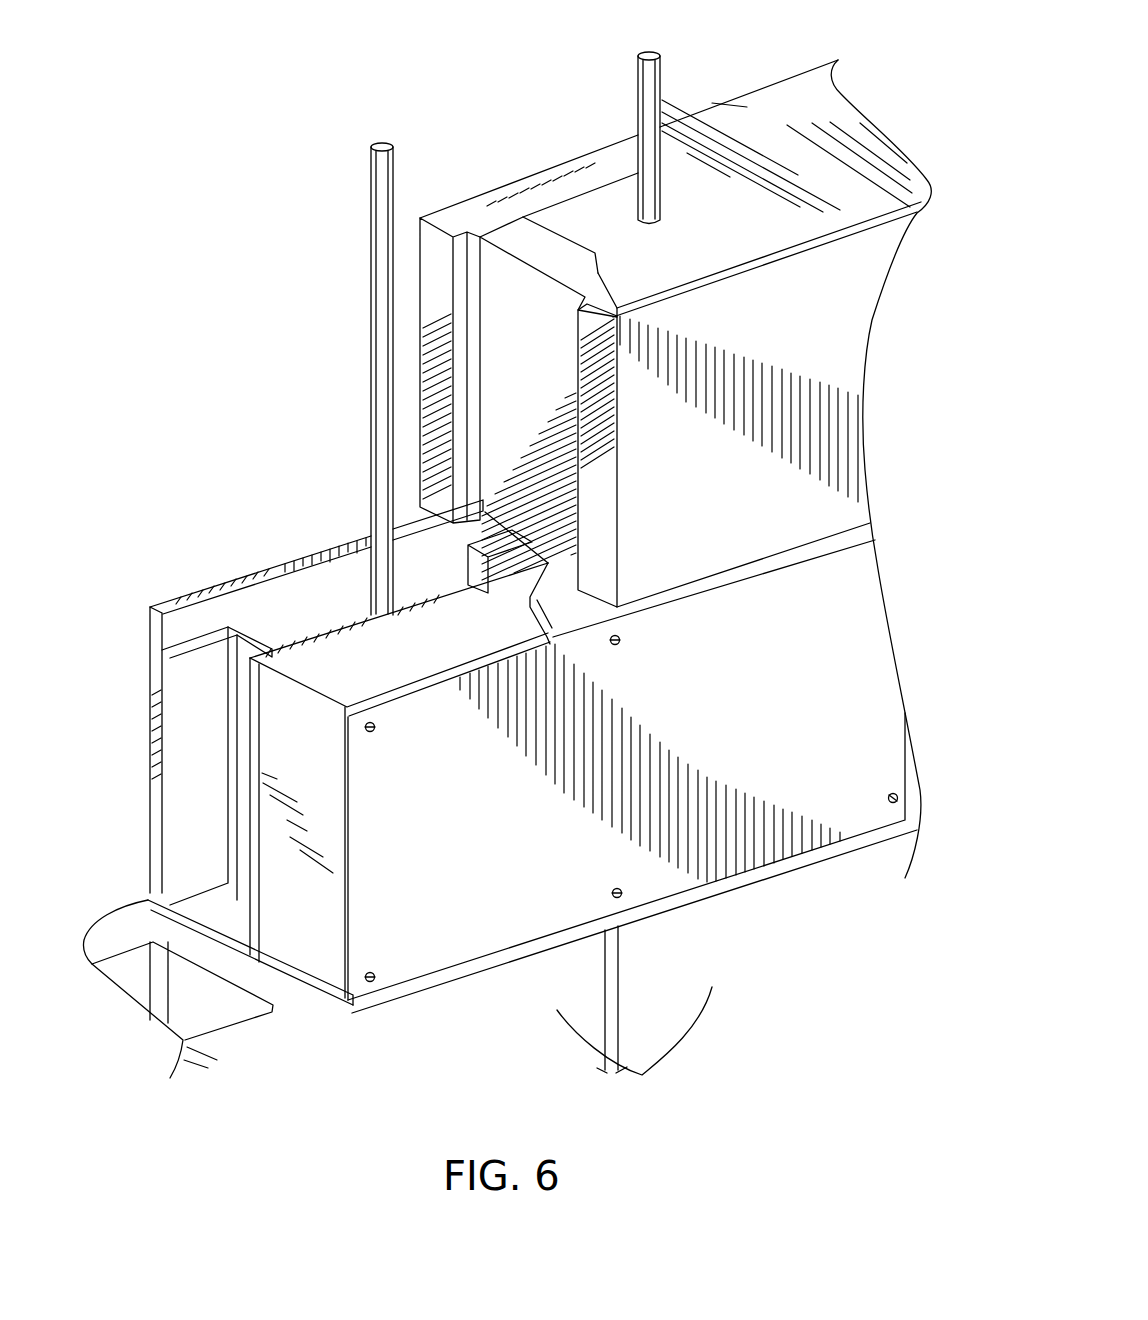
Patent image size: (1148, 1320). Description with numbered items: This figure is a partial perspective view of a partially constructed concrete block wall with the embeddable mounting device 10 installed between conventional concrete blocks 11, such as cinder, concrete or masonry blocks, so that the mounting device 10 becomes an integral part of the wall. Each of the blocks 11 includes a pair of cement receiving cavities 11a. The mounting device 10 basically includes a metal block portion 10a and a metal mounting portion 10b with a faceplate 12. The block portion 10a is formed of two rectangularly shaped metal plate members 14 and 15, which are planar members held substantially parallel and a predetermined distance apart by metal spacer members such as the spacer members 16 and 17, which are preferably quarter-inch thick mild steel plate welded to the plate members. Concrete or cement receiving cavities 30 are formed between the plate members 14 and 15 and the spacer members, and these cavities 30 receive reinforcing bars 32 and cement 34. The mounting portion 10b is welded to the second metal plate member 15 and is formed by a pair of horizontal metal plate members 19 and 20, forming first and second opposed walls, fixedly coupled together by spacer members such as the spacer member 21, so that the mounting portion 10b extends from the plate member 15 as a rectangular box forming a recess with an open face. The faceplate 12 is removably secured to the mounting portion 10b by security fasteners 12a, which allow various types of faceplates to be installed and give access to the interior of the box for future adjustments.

The embeddable mounting device 10 is at (272, 546).
The metal block portion 10a is at (297, 557).
The metal mounting portion 10b is at (297, 937).
The concrete block 11 is at (530, 180).
The cement receiving cavity 11a is at (576, 225).
The faceplate 12 is at (647, 880).
The security fastener 12a is at (620, 644).
The first rectangularly shaped metal plate member 14 is at (172, 605).
The second rectangularly shaped metal plate member 15 is at (345, 628).
The metal spacer member 16 is at (208, 633).
The metal spacer member 17 is at (467, 560).
The horizontal metal plate member 19 is at (300, 687).
The horizontal metal plate member 20 is at (263, 953).
The metal spacer member 21 is at (323, 823).
The concrete or cement receiving cavity 30 is at (279, 603).
The reinforcing bar 32 is at (662, 85).
The cement 34 is at (607, 207).